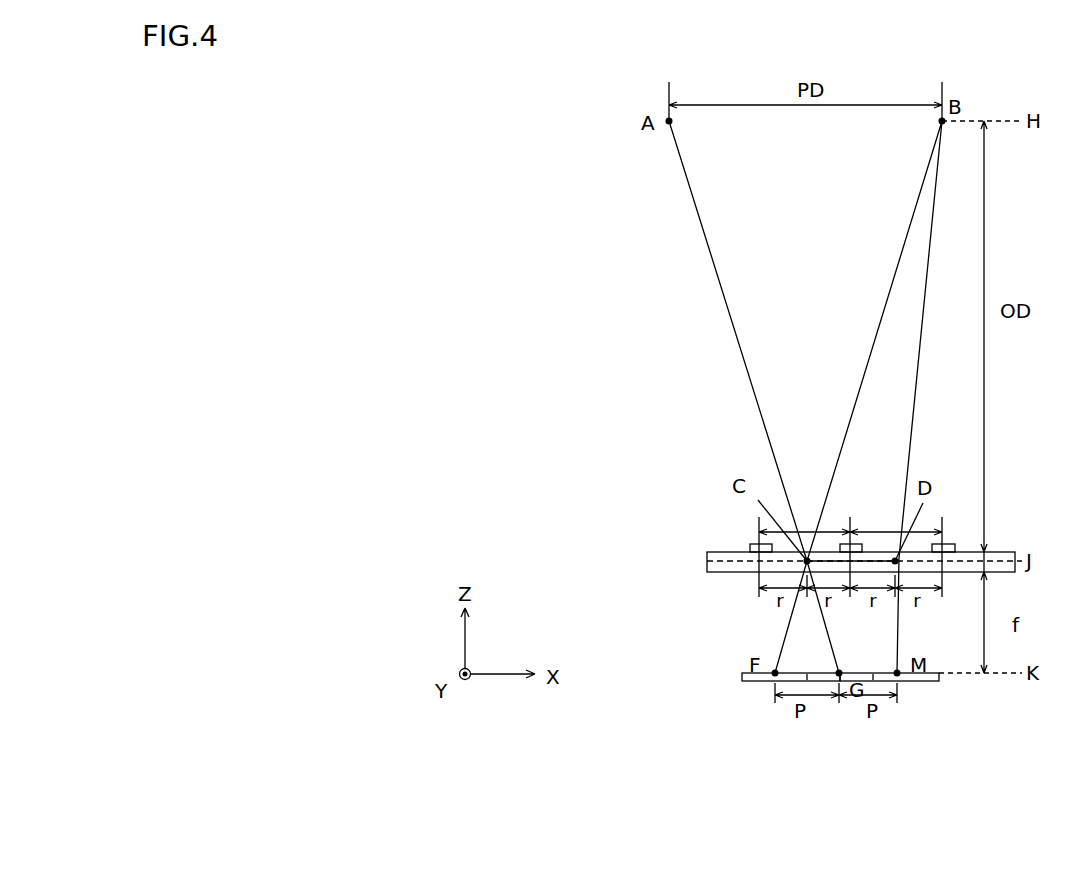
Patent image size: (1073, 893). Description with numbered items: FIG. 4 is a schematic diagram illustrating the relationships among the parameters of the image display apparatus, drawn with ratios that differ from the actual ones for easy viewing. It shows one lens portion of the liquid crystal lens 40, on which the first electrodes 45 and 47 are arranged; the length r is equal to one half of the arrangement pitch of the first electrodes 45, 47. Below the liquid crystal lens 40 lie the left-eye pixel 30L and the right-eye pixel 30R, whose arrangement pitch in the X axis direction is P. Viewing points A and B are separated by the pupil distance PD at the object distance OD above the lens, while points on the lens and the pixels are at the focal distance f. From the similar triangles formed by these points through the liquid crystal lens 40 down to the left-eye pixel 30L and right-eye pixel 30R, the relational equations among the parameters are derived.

The liquid crystal lens 40 is at (738, 560).
The first electrode 45 is at (750, 544).
The first electrode 47 is at (850, 544).
The left-eye pixel 30L is at (748, 683).
The right-eye pixel 30R is at (847, 687).